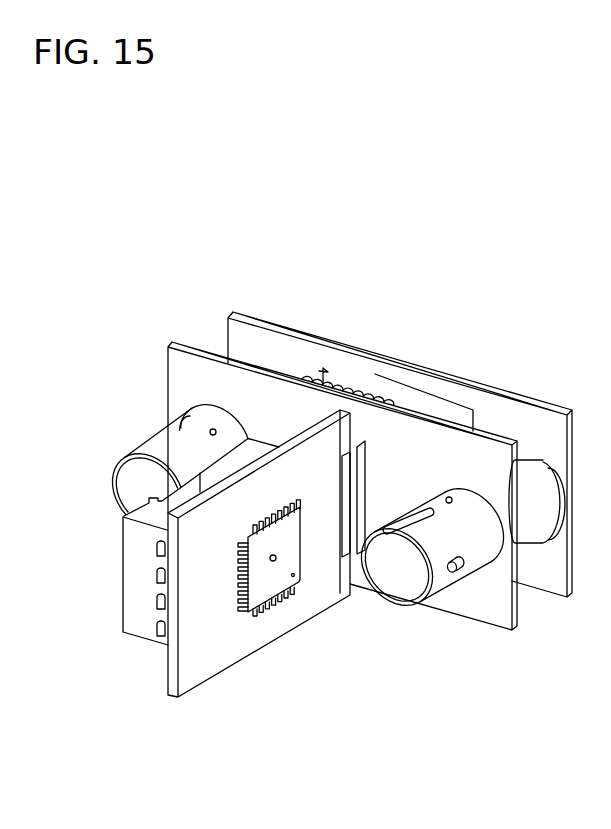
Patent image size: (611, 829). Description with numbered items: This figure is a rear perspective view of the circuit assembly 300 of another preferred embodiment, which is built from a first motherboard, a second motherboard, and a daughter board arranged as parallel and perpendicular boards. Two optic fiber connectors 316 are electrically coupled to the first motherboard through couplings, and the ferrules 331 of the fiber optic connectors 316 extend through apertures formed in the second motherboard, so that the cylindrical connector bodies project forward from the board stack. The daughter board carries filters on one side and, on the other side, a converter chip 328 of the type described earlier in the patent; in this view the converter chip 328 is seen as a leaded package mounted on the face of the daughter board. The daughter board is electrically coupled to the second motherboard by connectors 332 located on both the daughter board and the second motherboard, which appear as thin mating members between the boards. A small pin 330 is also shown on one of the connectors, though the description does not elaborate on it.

The circuit assembly 300 is at (243, 248).
The optic fiber connector 316 is at (214, 429).
The converter chip 328 is at (275, 562).
The pin 330 is at (464, 585).
The ferrule 331 is at (483, 550).
The connector 332 is at (346, 458).